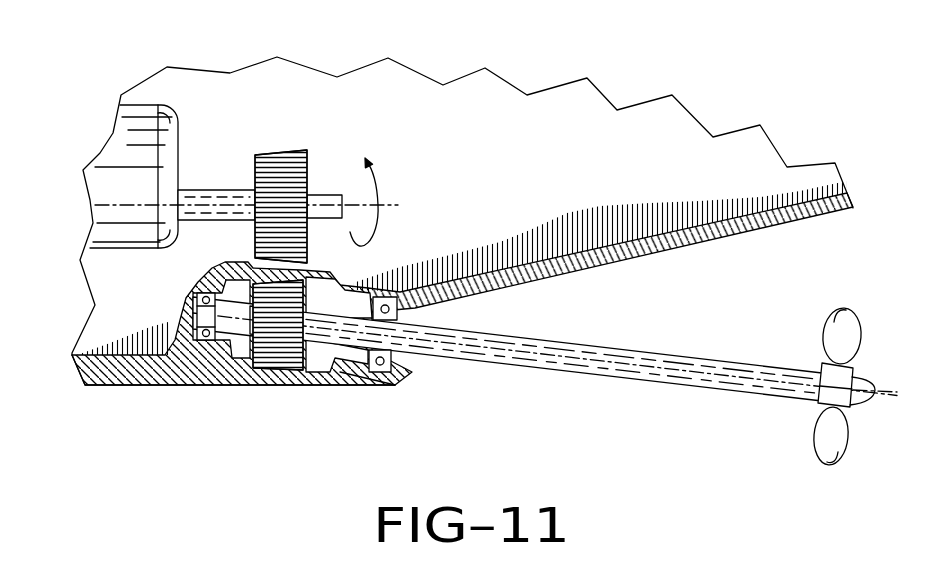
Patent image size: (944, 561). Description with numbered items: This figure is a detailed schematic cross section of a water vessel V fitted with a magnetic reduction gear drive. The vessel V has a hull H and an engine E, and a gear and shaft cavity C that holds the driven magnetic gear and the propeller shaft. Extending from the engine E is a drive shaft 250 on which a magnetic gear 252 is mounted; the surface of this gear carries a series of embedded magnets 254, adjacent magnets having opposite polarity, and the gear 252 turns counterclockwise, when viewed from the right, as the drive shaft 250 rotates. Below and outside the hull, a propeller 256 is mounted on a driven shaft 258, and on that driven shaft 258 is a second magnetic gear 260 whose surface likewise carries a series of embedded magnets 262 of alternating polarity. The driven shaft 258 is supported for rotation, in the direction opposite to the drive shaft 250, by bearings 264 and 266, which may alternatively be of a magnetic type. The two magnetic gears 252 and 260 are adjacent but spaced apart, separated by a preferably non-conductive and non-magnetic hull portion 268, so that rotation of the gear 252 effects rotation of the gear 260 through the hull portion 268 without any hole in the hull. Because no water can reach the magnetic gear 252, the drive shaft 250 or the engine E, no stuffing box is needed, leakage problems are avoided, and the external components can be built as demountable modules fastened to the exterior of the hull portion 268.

The drive shaft 250 is at (325, 196).
The magnetic gear 252 is at (245, 141).
The magnets 254 is at (283, 157).
The propeller 256 is at (827, 428).
The driven shaft 258 is at (700, 357).
The magnetic gear 260 is at (313, 385).
The magnets 262 is at (268, 350).
The bearing 264 is at (206, 342).
The bearing 266 is at (393, 378).
The hull portion 268 is at (250, 272).
The engine E is at (122, 155).
The hull H is at (110, 353).
The vessel V is at (110, 386).
The gear and shaft cavity C is at (365, 378).